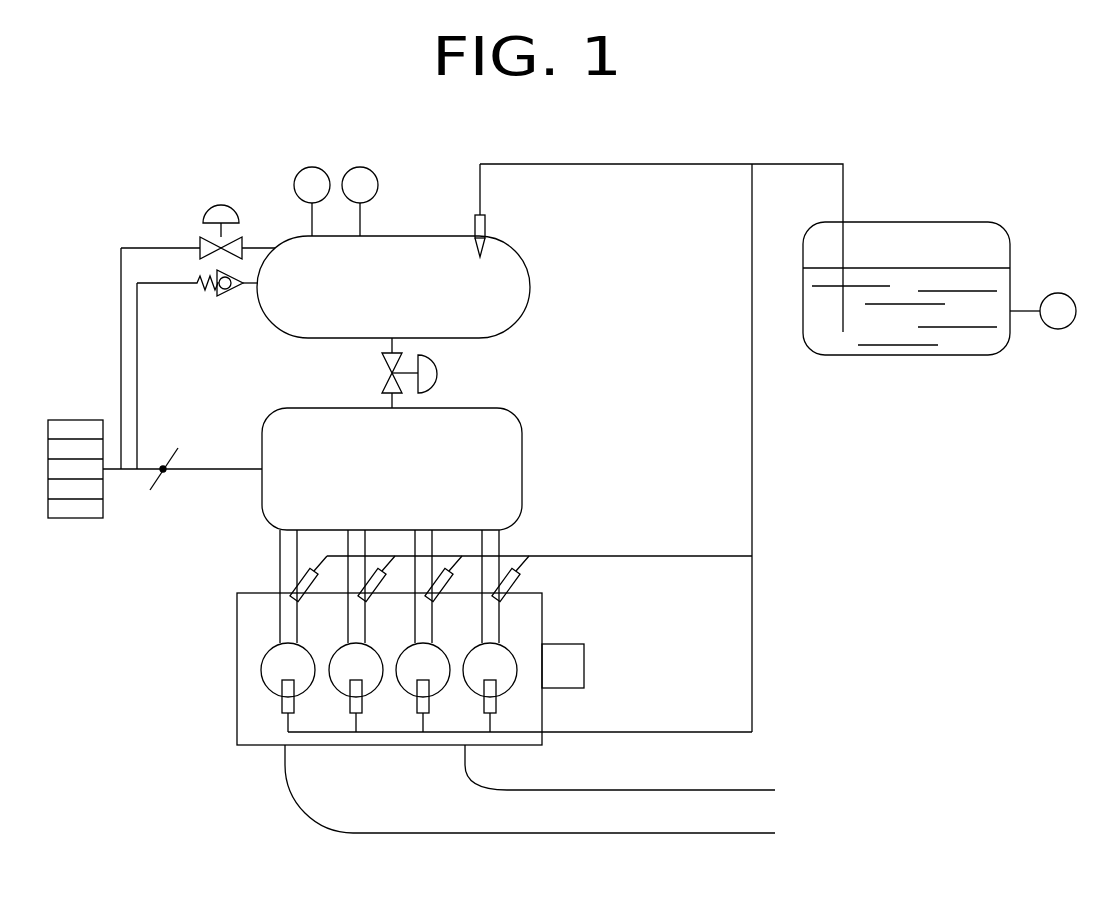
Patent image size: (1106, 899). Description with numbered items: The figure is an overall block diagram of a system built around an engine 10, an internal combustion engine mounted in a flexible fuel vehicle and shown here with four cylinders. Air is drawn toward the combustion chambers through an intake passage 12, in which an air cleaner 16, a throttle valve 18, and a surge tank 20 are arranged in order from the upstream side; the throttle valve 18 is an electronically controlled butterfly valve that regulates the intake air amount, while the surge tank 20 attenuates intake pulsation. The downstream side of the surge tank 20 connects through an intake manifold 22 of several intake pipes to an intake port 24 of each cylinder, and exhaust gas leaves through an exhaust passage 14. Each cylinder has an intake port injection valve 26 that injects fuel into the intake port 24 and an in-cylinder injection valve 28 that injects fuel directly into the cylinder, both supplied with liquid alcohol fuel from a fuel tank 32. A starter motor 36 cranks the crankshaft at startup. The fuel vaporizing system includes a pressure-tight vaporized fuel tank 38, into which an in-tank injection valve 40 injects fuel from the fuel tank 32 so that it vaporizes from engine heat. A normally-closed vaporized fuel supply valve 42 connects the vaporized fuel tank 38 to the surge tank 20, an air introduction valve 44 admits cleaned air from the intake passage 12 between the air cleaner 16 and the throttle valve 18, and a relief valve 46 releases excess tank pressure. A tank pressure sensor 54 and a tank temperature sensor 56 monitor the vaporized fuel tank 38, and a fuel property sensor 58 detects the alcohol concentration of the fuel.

The engine 10 is at (180, 663).
The intake passage 12 is at (212, 466).
The exhaust passage 14 is at (312, 803).
The air cleaner 16 is at (75, 518).
The throttle valve 18 is at (155, 490).
The surge tank 20 is at (505, 417).
The intake manifold 22 is at (284, 568).
The intake port 24 is at (285, 624).
The intake port injection valve 26 is at (517, 583).
The in-cylinder injection valve 28 is at (283, 706).
The fuel tank 32 is at (914, 230).
The starter motor 36 is at (576, 665).
The vaporized fuel tank 38 is at (526, 287).
The in-tank injection valve 40 is at (485, 226).
The vaporized fuel supply valve 42 is at (437, 373).
The air introduction valve 44 is at (219, 202).
The relief valve 46 is at (226, 291).
The tank pressure sensor 54 is at (366, 168).
The tank temperature sensor 56 is at (306, 168).
The fuel property sensor 58 is at (1060, 293).